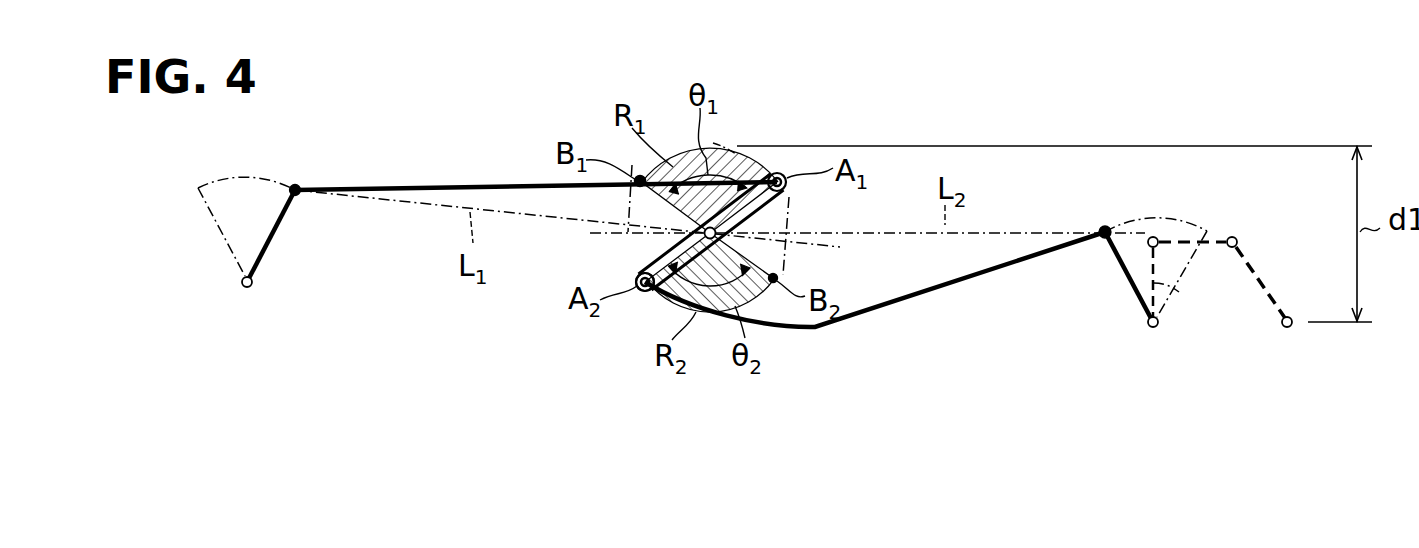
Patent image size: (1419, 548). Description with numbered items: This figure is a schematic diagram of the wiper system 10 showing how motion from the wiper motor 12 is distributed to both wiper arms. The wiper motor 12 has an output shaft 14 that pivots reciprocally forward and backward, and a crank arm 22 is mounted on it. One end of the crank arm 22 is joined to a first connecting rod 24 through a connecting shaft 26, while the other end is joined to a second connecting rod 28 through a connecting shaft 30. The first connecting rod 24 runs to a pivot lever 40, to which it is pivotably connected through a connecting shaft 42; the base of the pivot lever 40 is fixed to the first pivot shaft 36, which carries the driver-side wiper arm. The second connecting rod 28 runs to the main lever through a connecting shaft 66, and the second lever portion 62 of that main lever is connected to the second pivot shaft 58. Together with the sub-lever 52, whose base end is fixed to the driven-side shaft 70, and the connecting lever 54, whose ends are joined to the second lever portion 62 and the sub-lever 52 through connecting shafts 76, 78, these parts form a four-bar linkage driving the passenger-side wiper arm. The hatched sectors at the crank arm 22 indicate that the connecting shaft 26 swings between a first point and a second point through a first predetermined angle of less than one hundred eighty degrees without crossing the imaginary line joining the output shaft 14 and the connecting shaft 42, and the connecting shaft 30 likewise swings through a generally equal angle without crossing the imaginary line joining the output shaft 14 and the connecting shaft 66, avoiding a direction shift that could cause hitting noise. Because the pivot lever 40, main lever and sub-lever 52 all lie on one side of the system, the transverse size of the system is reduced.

The wiper system 10 is at (668, 112).
The wiper motor 12 is at (713, 143).
The output shaft 14 is at (790, 216).
The crank arm 22 is at (652, 268).
The first connecting rod 24 is at (470, 186).
The connecting shaft 26 is at (781, 172).
The second connecting rod 28 is at (997, 273).
The connecting shaft 30 is at (641, 292).
The first pivot shaft 36 is at (247, 288).
The pivot lever 40 is at (276, 228).
The connecting shaft 42 is at (297, 184).
The sub-lever 52 is at (1258, 270).
The connecting lever 54 is at (1213, 232).
The second pivot shaft 58 is at (1153, 328).
The second lever portion 62 is at (1168, 284).
The connecting shaft 66 is at (1103, 227).
The driven-side shaft 70 is at (1287, 328).
The connecting shaft 76 is at (1153, 236).
The connecting shaft 78 is at (1237, 240).